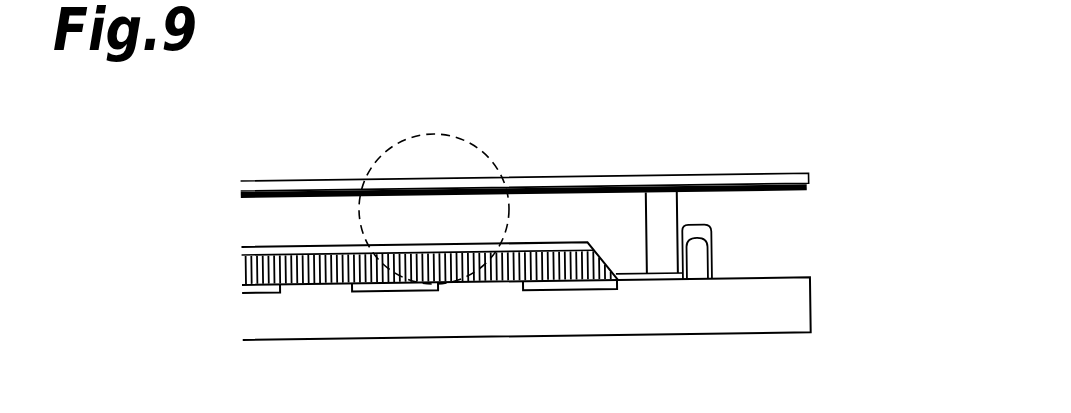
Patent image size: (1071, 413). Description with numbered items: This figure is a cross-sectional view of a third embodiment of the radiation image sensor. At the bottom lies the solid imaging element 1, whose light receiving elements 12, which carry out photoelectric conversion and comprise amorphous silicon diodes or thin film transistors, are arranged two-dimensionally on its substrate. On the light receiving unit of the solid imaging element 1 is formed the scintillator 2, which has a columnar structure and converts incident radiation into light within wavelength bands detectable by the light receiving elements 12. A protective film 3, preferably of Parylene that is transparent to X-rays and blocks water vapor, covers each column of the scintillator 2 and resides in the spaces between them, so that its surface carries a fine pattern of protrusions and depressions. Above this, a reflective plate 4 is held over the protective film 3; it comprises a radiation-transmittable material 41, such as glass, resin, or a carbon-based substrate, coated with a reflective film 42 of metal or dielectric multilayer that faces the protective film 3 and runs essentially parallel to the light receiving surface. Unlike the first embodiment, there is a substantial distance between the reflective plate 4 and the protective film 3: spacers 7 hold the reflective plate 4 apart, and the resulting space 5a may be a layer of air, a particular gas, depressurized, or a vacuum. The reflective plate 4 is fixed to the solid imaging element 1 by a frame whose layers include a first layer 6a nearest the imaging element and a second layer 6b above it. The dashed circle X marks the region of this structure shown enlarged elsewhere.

The solid imaging element 1 is at (250, 323).
The light receiving elements 12 is at (266, 293).
The scintillator 2 is at (243, 272).
The protective film 3 is at (250, 252).
The reflective plate 4 is at (588, 162).
The radiation-transmittable material 41 is at (808, 177).
The reflective film 42 is at (563, 185).
The space 5a is at (277, 208).
The first layer of frame 6a is at (703, 263).
The second layer of frame 6b is at (702, 232).
The spacers 7 is at (677, 213).
The region X is at (492, 152).